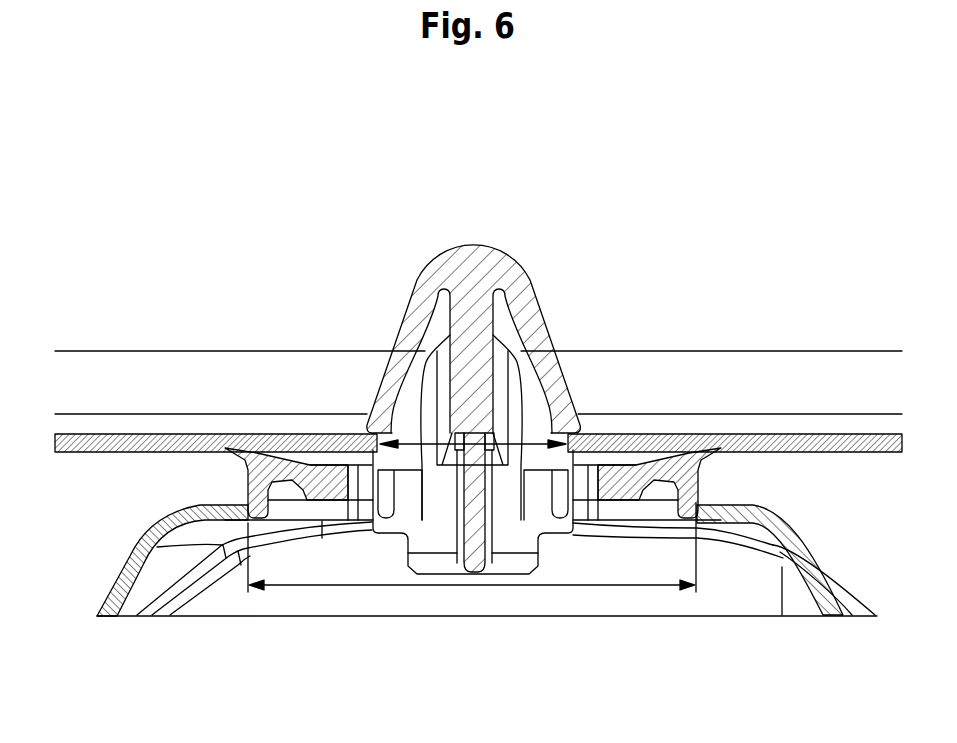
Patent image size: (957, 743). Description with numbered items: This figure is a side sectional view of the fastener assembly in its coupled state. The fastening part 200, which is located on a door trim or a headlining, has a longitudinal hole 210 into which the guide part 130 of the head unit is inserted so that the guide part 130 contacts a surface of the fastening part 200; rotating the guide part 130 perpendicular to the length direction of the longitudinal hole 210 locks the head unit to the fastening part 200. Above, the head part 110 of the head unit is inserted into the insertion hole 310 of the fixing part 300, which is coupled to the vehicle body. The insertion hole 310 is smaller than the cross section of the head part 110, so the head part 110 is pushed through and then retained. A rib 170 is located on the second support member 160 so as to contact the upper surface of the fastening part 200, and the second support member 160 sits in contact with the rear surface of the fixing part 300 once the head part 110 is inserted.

The head part 110 is at (475, 246).
The guide part 130 is at (512, 562).
The second support member 160 is at (666, 458).
The rib 170 is at (684, 522).
The fastening part 200 is at (118, 580).
The longitudinal hole 210 is at (326, 586).
The fixing part 300 is at (128, 438).
The insertion hole 310 is at (420, 444).